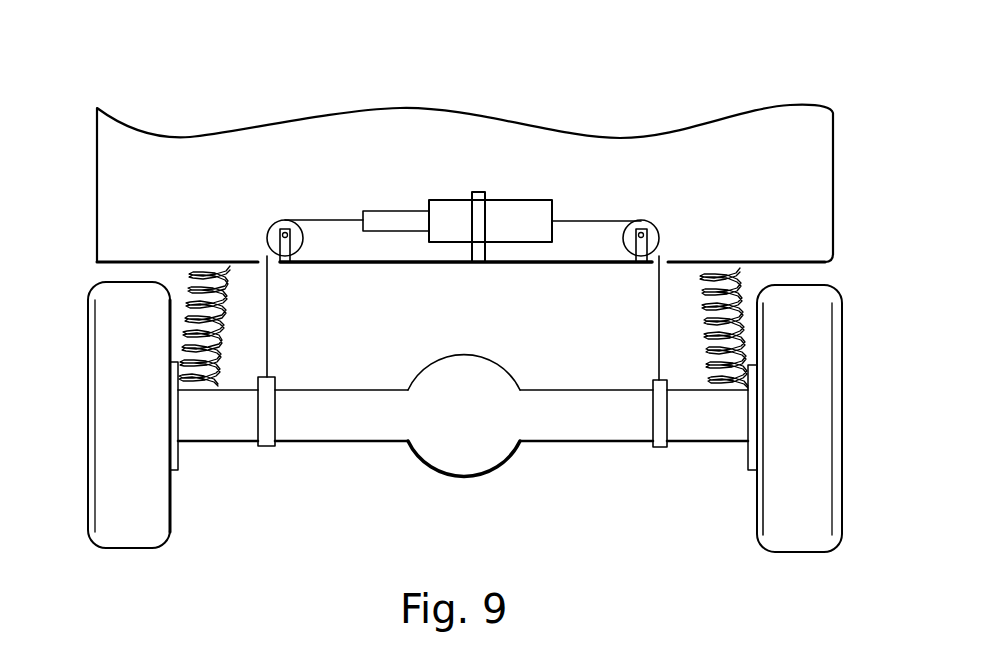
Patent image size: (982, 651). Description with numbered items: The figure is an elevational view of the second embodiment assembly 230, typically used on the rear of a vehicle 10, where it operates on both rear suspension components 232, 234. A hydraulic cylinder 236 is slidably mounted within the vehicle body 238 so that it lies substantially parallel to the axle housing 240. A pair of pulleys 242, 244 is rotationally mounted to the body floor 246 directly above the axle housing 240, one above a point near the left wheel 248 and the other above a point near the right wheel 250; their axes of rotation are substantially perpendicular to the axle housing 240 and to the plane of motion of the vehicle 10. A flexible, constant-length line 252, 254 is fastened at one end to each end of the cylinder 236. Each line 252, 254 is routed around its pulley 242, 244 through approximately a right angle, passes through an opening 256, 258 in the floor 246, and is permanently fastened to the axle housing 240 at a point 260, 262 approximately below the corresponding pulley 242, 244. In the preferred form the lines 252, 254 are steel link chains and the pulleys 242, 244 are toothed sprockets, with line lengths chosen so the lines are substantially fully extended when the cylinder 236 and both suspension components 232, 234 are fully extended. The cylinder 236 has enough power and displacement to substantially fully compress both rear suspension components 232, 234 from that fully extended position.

The vehicle 10 is at (429, 153).
The assembly 230 is at (389, 190).
The suspension component 232 is at (168, 275).
The suspension component 234 is at (758, 280).
The hydraulic cylinder 236 is at (523, 190).
The vehicle body 238 is at (97, 183).
The axle housing 240 is at (570, 443).
The pulley 242 is at (315, 263).
The pulley 244 is at (608, 264).
The body floor 246 is at (416, 265).
The left wheel 248 is at (171, 493).
The right wheel 250 is at (757, 512).
The line 252 is at (268, 350).
The line 254 is at (659, 332).
The opening 256 is at (270, 270).
The opening 258 is at (652, 264).
The fastening point 260 is at (276, 382).
The fastening point 262 is at (652, 384).